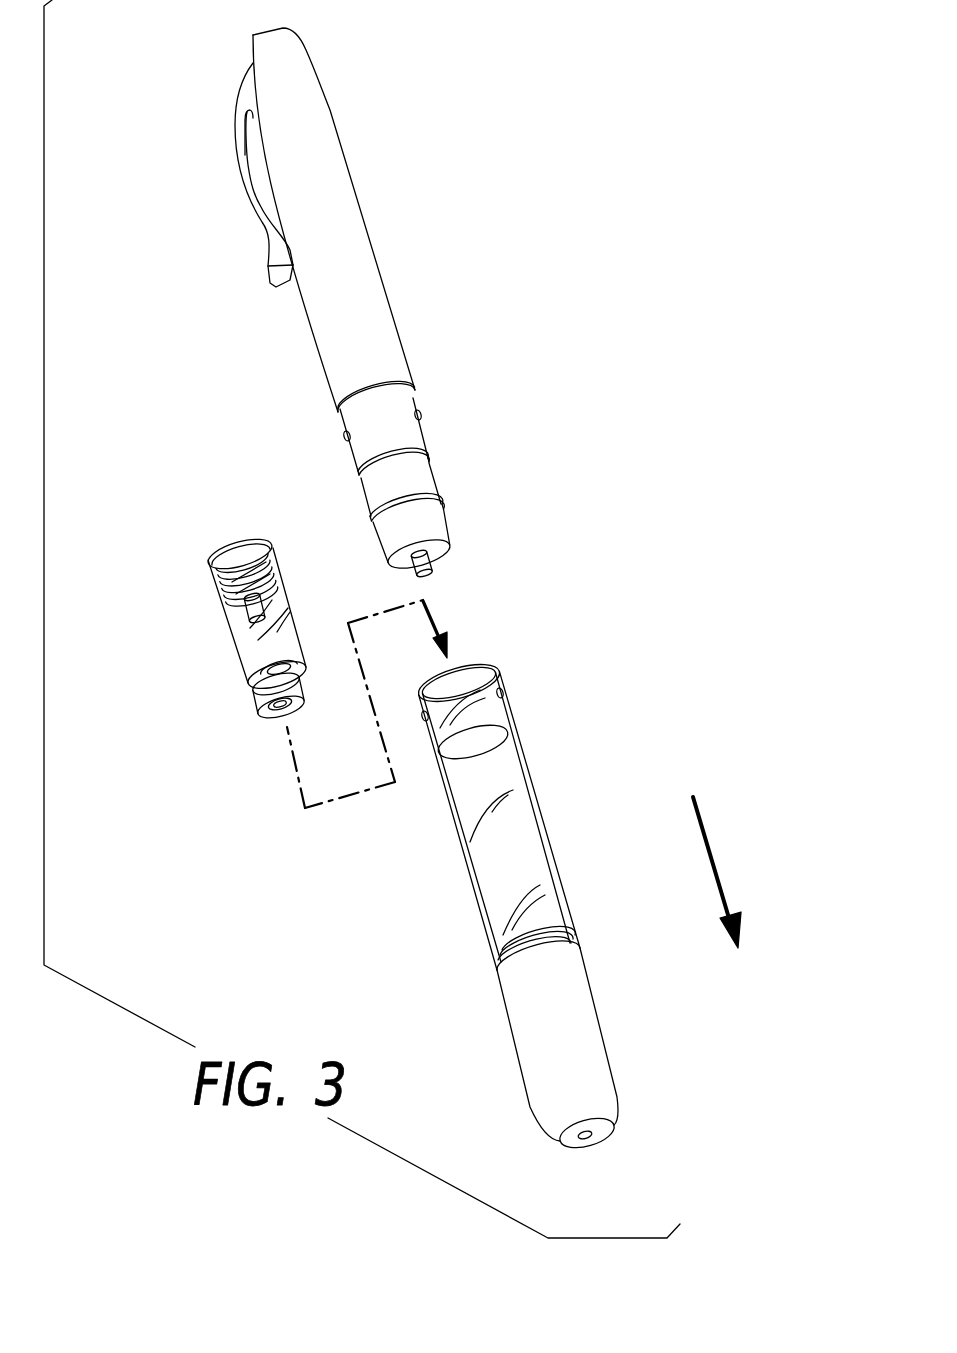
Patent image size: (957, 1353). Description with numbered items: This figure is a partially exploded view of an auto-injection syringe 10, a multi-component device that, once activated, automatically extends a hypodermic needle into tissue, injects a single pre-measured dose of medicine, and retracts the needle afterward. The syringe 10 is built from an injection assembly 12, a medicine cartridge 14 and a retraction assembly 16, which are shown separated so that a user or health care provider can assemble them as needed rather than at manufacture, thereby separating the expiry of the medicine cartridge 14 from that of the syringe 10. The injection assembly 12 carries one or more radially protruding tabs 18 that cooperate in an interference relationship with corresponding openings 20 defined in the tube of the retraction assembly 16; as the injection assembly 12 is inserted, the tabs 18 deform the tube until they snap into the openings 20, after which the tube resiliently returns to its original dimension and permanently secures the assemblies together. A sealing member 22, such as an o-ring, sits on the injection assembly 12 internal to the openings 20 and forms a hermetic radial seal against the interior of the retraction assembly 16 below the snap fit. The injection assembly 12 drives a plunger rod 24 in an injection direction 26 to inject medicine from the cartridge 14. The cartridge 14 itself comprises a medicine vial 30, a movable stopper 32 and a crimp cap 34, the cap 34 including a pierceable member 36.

The auto-injection syringe 10 is at (556, 468).
The injection assembly 12 is at (401, 293).
The medicine cartridge 14 is at (225, 670).
The retraction assembly 16 is at (576, 900).
The radially protruding tabs 18 is at (423, 415).
The openings 20 is at (423, 717).
The sealing member 22 is at (370, 514).
The plunger rod 24 is at (436, 572).
The injection direction 26 is at (697, 820).
The medicine vial 30 is at (292, 618).
The movable stopper 32 is at (237, 609).
The crimp cap 34 is at (254, 699).
The pierceable member 36 is at (281, 711).